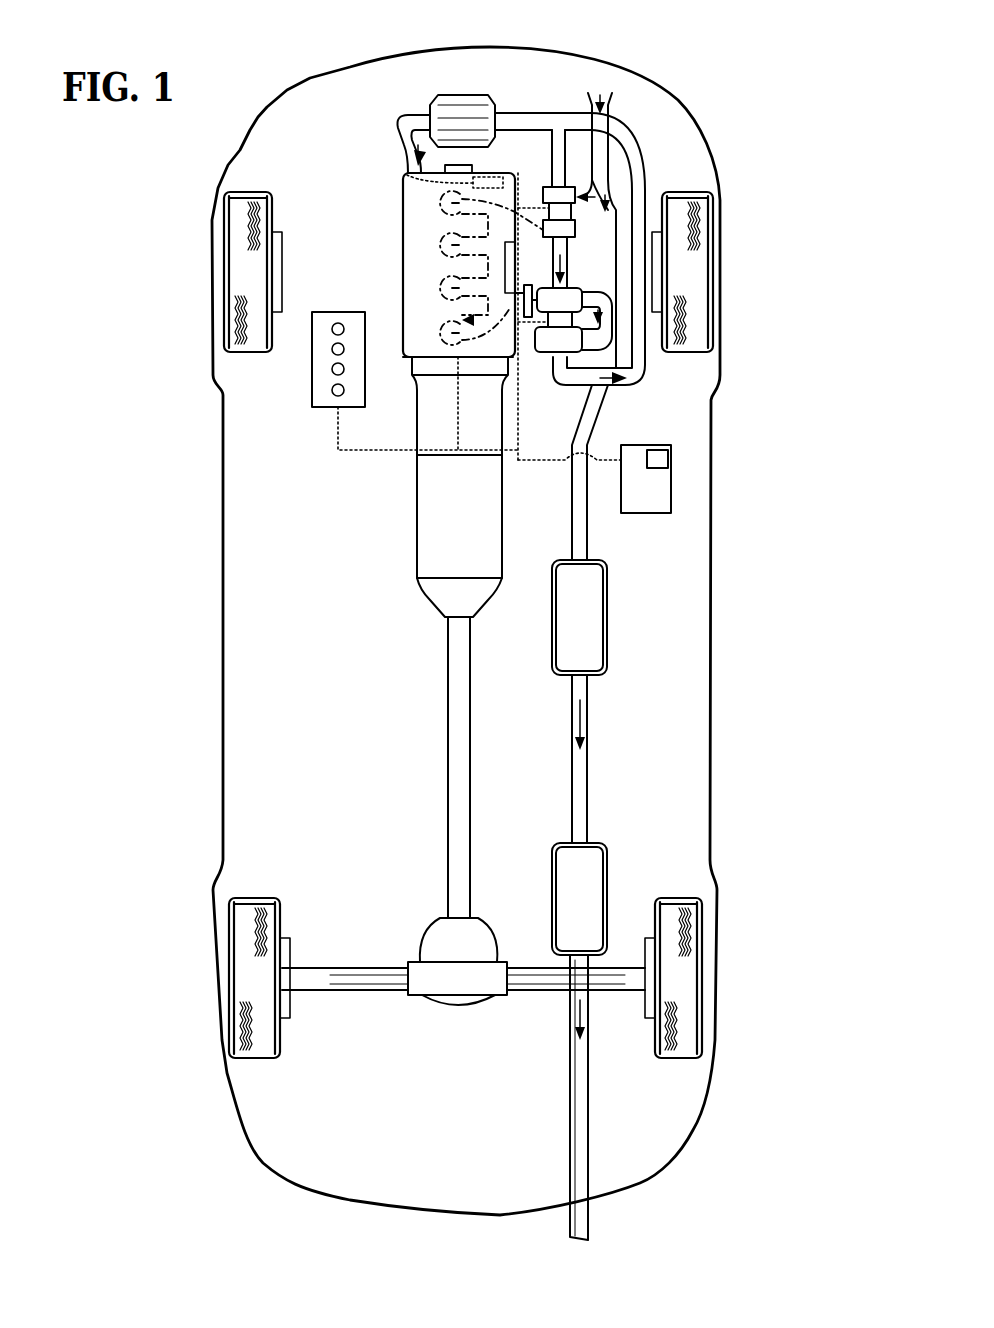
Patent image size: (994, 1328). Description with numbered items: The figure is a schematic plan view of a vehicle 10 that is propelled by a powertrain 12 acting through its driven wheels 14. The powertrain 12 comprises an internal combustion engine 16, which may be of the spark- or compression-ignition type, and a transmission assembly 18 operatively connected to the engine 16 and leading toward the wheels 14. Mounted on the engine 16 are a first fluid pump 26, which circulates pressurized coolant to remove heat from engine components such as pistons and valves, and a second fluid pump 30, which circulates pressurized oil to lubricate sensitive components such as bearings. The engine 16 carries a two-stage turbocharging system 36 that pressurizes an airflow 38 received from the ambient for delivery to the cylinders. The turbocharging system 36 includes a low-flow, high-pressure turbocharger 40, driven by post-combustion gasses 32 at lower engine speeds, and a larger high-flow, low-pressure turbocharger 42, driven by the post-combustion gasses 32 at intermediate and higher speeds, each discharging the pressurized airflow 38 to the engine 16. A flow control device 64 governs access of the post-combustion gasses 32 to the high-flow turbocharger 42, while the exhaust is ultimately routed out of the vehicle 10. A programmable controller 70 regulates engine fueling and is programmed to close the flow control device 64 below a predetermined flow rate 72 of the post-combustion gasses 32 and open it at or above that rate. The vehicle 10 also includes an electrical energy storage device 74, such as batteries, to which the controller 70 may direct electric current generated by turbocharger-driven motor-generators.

The vehicle 10 is at (204, 522).
The powertrain 12 is at (368, 574).
The driven wheels 14 is at (255, 986).
The internal combustion engine 16 is at (400, 253).
The transmission assembly 18 is at (470, 534).
The first fluid pump 26 is at (468, 165).
The second fluid pump 30 is at (407, 175).
The post-combustion gasses 32 is at (568, 268).
The turbocharging system 36 is at (662, 166).
The airflow 38 is at (545, 124).
The low-flow turbocharger 40 is at (548, 186).
The high-flow turbocharger 42 is at (545, 354).
The flow control device 64 is at (530, 289).
The programmable controller 70 is at (656, 502).
The predetermined flow rate 72 is at (662, 470).
The electrical energy storage device 74 is at (312, 390).